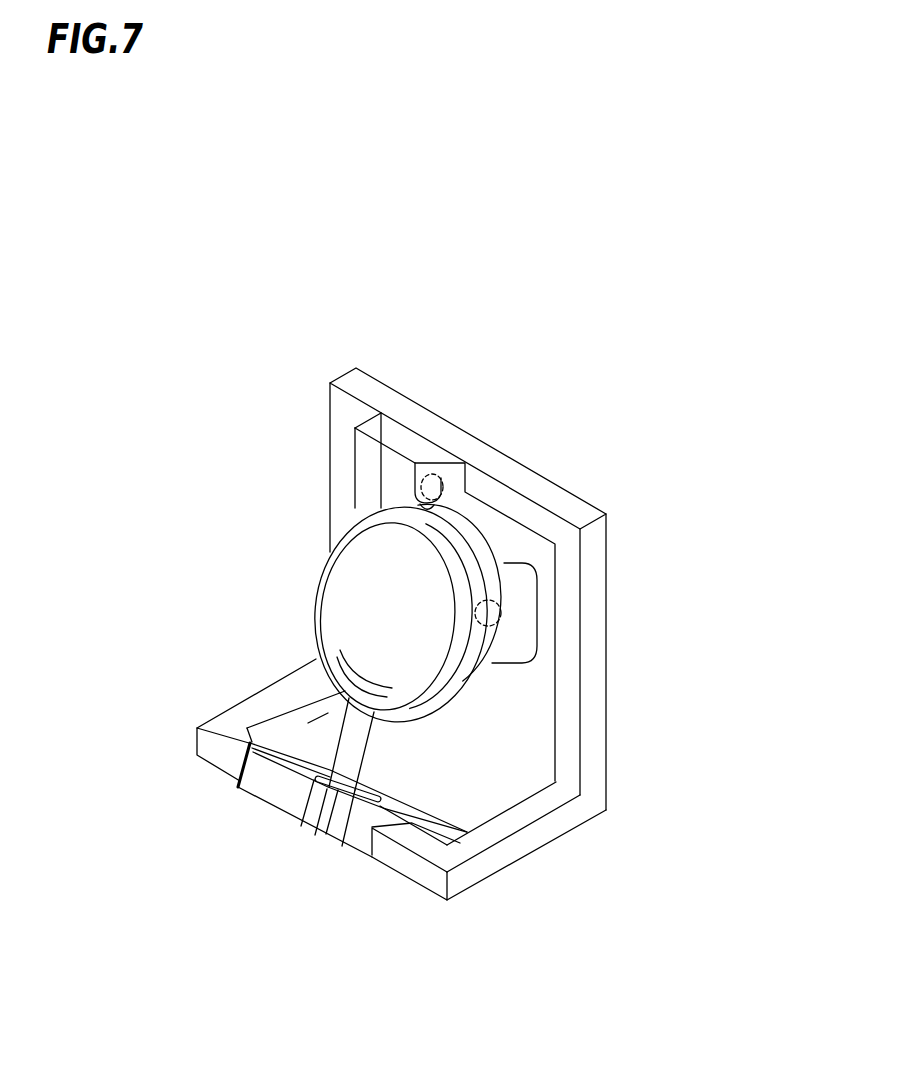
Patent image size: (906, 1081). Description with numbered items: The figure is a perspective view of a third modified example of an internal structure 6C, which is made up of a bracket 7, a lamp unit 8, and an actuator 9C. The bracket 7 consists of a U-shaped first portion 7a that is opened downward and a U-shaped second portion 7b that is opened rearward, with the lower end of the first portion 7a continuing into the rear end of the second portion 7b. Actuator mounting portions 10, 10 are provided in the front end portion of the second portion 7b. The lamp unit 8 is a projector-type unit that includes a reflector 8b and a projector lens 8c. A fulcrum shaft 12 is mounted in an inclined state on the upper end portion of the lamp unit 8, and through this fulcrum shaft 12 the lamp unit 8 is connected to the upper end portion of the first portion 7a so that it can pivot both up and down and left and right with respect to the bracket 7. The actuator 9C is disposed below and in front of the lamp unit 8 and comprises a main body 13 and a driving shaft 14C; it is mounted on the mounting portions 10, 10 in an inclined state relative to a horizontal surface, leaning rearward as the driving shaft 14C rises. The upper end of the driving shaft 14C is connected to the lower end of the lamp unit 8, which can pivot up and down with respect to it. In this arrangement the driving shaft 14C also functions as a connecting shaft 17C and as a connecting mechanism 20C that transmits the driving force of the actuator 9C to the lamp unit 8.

The internal structure 6C is at (183, 478).
The bracket 7 is at (602, 613).
The first portion 7a is at (598, 639).
The second portion 7b is at (556, 827).
The lamp unit 8 is at (325, 563).
The reflector 8b is at (488, 557).
The projector lens 8c is at (322, 594).
The actuator 9C is at (262, 794).
The actuator mounting portion 10 is at (297, 752).
The fulcrum shaft 12 is at (440, 465).
The main body 13 is at (291, 812).
The driving shaft 14C is at (551, 744).
The connecting shaft 17C is at (551, 744).
The connecting mechanism 20C is at (357, 738).